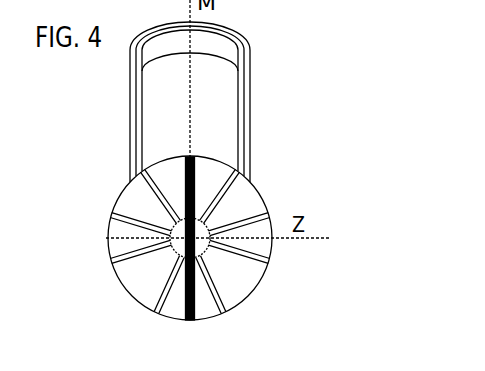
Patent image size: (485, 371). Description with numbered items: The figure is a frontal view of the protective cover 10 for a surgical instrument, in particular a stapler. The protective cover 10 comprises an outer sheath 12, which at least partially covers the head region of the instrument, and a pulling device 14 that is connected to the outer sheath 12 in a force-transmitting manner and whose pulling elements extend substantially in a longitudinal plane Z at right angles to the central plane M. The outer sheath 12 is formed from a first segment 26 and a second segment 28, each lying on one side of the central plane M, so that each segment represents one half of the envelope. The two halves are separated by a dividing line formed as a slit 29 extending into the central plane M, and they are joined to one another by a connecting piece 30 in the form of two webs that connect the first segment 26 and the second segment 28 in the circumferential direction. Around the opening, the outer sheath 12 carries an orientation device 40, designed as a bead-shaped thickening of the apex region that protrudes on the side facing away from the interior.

The protective cover 10 is at (292, 48).
The outer sheath 12 is at (257, 192).
The pulling device 14 is at (255, 98).
The first segment 26 is at (242, 280).
The second segment 28 is at (142, 283).
The slit 29 is at (140, 152).
The connecting piece 30 is at (186, 158).
The orientation device 40 is at (120, 222).